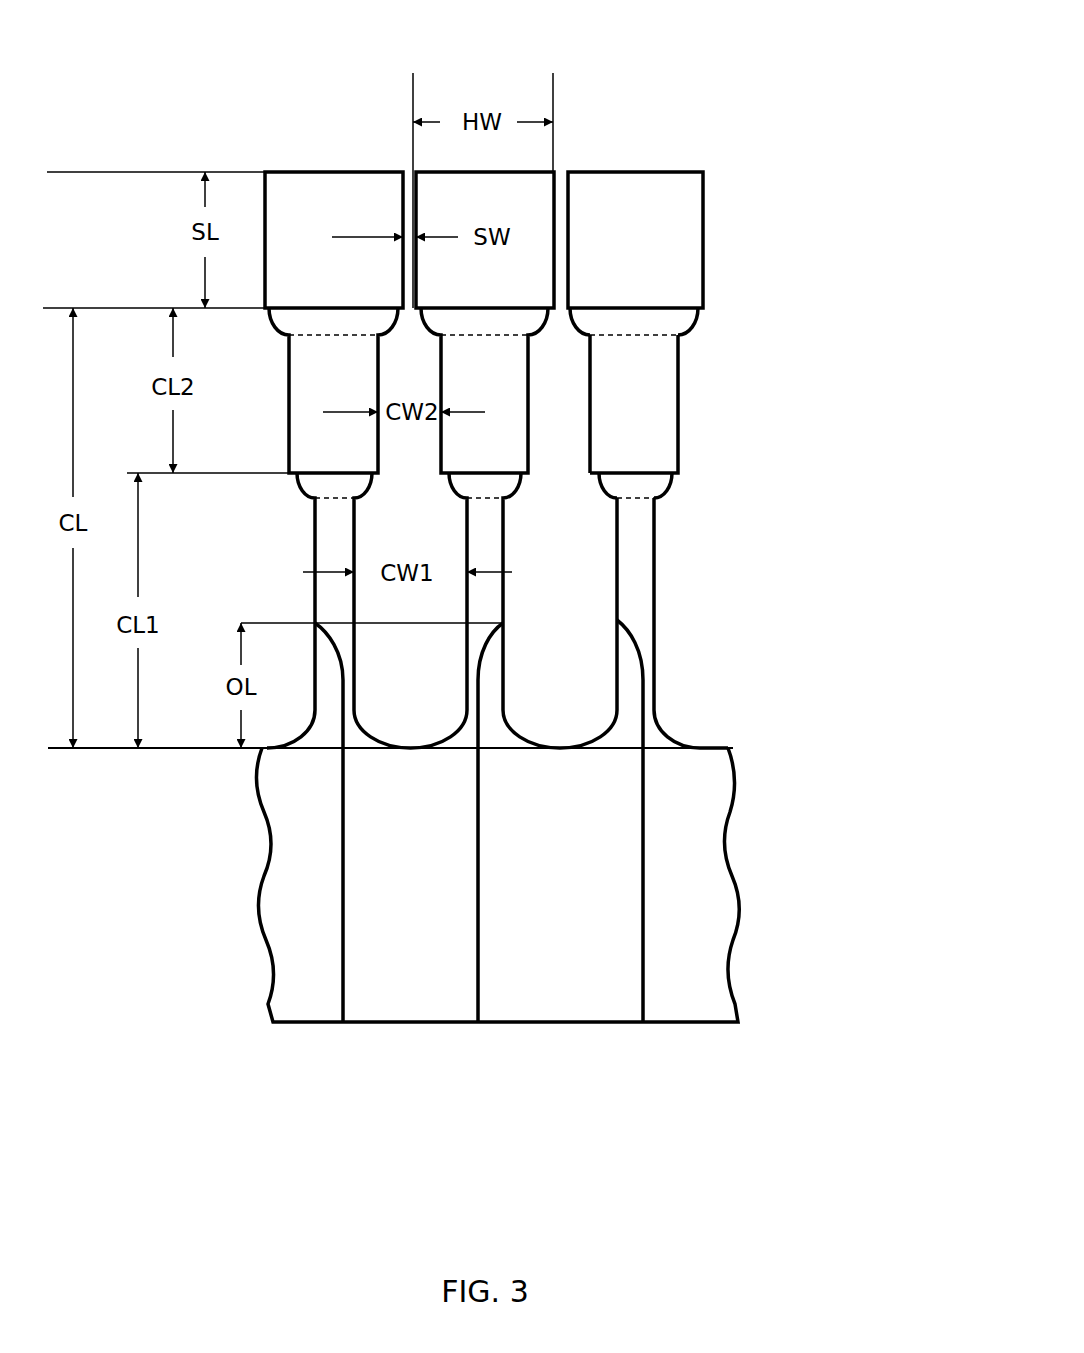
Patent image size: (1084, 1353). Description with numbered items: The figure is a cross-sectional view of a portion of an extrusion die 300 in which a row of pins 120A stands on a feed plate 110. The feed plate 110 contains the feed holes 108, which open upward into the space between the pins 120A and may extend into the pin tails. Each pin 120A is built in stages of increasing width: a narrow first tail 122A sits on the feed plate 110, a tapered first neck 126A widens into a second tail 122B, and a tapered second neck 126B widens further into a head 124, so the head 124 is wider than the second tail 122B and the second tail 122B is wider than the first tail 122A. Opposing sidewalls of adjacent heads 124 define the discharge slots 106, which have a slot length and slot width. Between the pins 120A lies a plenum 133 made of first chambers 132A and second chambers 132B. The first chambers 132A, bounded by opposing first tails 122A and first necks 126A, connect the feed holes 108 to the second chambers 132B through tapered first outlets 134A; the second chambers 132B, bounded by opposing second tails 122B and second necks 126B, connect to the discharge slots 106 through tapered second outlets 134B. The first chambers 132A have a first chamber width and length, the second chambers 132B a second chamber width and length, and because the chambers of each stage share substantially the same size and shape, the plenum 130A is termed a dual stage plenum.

The extrusion die 300 is at (470, 32).
The discharge slot 106 is at (562, 170).
The feed hole 108 is at (643, 848).
The feed plate 110 is at (735, 957).
The pin 120A is at (730, 185).
The first tail 122A is at (637, 560).
The second tail 122B is at (653, 435).
The head 124 is at (690, 243).
The tapered first neck 126A is at (640, 485).
The tapered second neck 126B is at (677, 318).
The dual stage plenum 130A is at (563, 772).
The first chamber 132A is at (568, 610).
The second chamber 132B is at (568, 398).
The plenum 133 is at (549, 700).
The tapered first outlet 134A is at (568, 488).
The tapered second outlet 134B is at (568, 336).